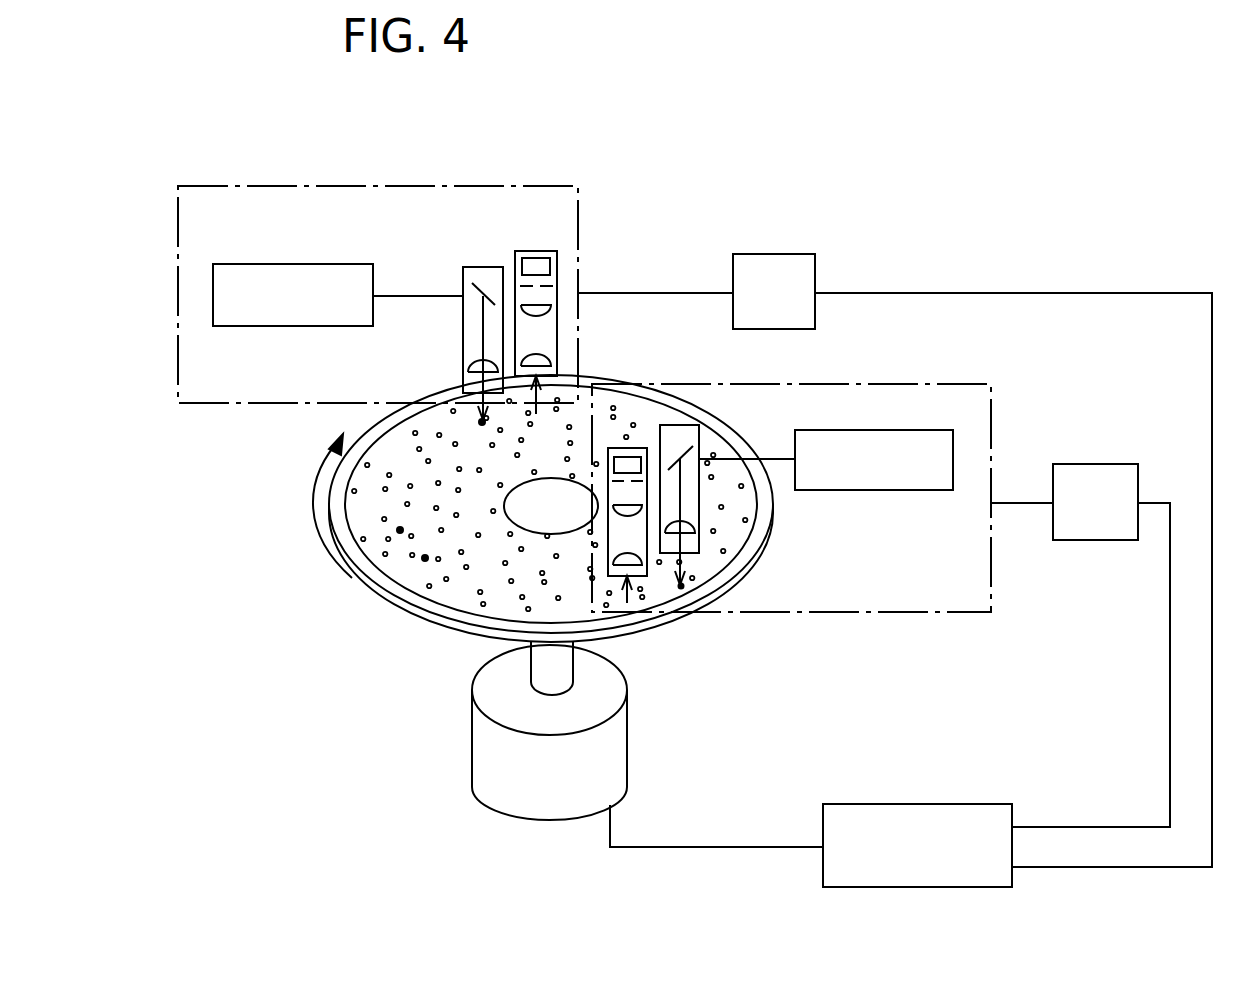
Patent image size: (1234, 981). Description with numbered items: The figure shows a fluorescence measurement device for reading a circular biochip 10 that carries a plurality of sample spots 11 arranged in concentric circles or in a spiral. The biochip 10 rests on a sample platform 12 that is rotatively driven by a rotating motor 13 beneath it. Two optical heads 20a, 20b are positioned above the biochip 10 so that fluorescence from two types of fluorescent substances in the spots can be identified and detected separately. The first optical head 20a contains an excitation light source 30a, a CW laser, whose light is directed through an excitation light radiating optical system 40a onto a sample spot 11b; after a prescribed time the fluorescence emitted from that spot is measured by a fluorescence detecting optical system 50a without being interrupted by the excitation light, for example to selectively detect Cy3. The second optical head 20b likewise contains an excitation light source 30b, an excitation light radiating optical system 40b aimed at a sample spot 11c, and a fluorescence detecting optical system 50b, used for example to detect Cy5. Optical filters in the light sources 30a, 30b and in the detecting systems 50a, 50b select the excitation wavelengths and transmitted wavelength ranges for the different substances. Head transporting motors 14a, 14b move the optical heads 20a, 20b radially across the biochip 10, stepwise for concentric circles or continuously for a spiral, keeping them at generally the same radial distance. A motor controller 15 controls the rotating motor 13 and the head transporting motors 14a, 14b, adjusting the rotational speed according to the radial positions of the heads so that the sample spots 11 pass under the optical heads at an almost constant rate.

The circular biochip 10 is at (458, 628).
The sample spots 11 is at (400, 532).
The sample spot 11b is at (482, 422).
The sample spot 11c is at (684, 586).
The sample platform 12 is at (648, 630).
The rotating motor 13 is at (477, 773).
The head transporting motor 14a is at (800, 254).
The head transporting motor 14b is at (1110, 540).
The motor controller 15 is at (890, 804).
The optical head 20a is at (277, 184).
The optical head 20b is at (950, 384).
The excitation light source 30a is at (295, 264).
The excitation light source 30b is at (912, 490).
The excitation light radiating optical system 40a is at (480, 267).
The excitation light radiating optical system 40b is at (678, 425).
The fluorescence detecting optical system 50a is at (552, 253).
The fluorescence detecting optical system 50b is at (633, 448).